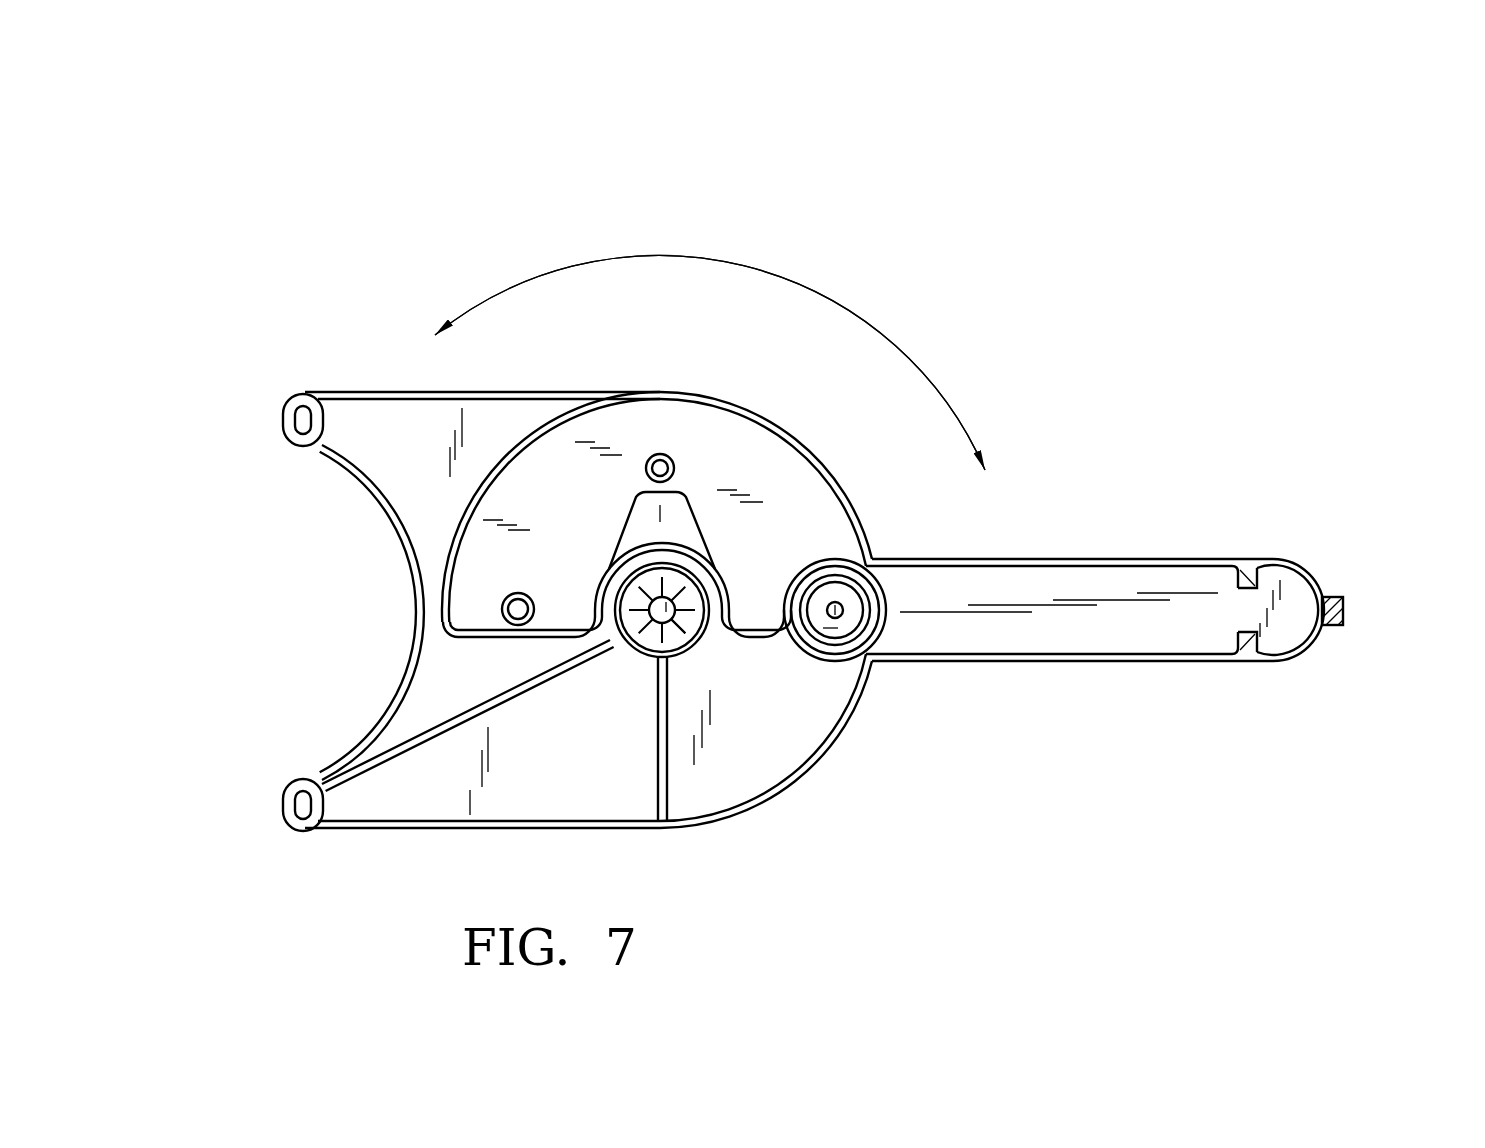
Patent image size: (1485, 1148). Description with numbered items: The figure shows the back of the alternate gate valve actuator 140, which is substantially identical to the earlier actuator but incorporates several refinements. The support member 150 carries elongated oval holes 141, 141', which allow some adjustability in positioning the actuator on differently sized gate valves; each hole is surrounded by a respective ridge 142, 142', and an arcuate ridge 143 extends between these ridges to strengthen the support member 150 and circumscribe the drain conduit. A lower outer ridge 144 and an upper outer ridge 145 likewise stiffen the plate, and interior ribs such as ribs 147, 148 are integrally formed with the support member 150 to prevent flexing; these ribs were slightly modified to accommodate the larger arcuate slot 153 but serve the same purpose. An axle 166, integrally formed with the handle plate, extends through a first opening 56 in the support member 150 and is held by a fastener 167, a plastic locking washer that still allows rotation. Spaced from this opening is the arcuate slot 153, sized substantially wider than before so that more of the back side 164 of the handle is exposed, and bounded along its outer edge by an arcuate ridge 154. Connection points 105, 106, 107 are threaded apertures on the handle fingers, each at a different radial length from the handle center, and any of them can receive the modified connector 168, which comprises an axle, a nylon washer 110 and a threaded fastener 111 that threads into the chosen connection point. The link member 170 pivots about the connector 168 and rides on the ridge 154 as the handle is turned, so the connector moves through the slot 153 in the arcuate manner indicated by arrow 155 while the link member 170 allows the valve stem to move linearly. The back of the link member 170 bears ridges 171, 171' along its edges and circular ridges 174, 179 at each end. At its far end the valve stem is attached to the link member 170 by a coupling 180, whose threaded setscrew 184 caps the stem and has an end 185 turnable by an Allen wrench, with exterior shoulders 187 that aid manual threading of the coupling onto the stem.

The gate valve actuator 140 is at (581, 180).
The hole 141 is at (256, 420).
The hole 141' is at (272, 782).
The ridge 142 is at (261, 401).
The ridge 142' is at (292, 827).
The arcuate ridge 143 is at (324, 612).
The lower outer ridge 144 is at (482, 844).
The upper outer ridge 145 is at (482, 375).
The rib 147 is at (438, 727).
The rib 148 is at (658, 772).
The support member 150 is at (557, 468).
The arcuate slot 153 is at (766, 599).
The arcuate ridge 154 is at (800, 610).
The arrow 155 is at (832, 300).
The back side 164 is at (807, 461).
The first opening 56 is at (613, 598).
The connection point 105 is at (517, 606).
The connection point 106 is at (643, 477).
The connection point 107 is at (825, 607).
The nylon washer 110 is at (880, 597).
The threaded fastener 111 is at (862, 640).
The axle 166 is at (653, 642).
The fastener 167 is at (717, 650).
The modified connector 168 is at (828, 597).
The link member 170 is at (1012, 553).
The ridge 171 is at (1089, 547).
The ridge 171' is at (1069, 671).
The circular ridge 174 is at (1253, 563).
The circular ridge 179 is at (917, 544).
The coupling 180 is at (1287, 558).
The setscrew 184 is at (1386, 579).
The end 185 is at (1345, 602).
The exterior shoulder 187 is at (1250, 580).